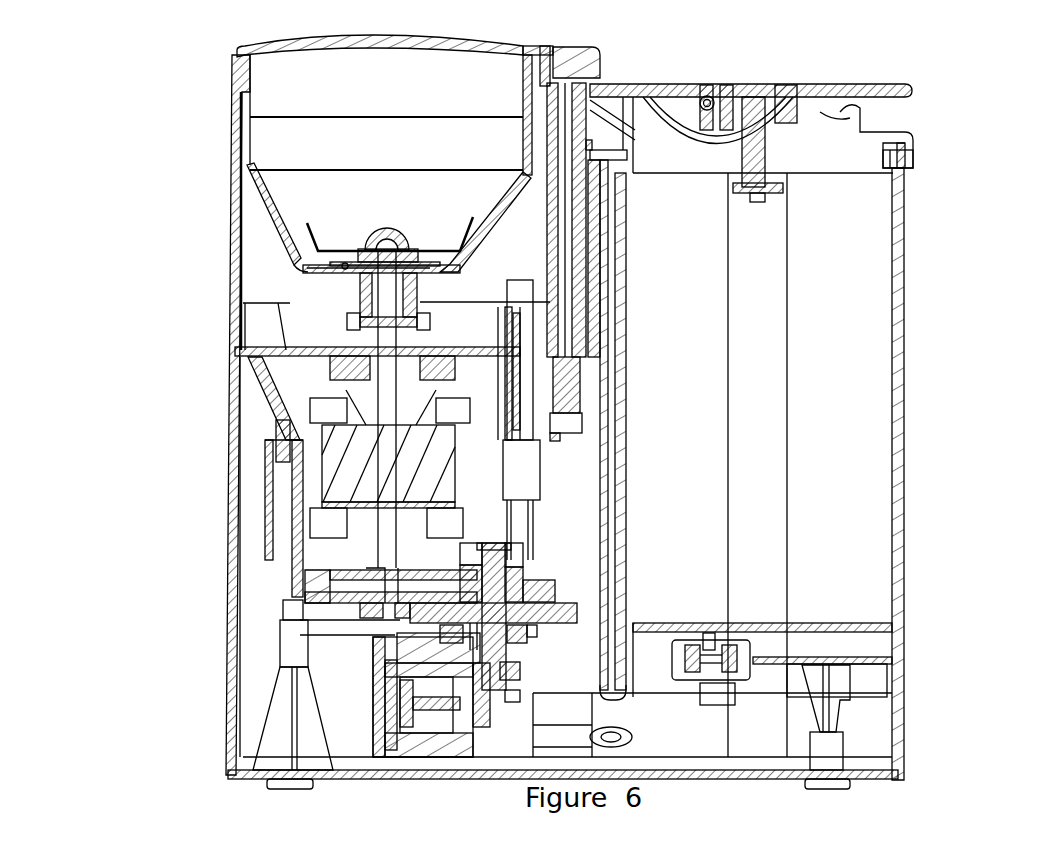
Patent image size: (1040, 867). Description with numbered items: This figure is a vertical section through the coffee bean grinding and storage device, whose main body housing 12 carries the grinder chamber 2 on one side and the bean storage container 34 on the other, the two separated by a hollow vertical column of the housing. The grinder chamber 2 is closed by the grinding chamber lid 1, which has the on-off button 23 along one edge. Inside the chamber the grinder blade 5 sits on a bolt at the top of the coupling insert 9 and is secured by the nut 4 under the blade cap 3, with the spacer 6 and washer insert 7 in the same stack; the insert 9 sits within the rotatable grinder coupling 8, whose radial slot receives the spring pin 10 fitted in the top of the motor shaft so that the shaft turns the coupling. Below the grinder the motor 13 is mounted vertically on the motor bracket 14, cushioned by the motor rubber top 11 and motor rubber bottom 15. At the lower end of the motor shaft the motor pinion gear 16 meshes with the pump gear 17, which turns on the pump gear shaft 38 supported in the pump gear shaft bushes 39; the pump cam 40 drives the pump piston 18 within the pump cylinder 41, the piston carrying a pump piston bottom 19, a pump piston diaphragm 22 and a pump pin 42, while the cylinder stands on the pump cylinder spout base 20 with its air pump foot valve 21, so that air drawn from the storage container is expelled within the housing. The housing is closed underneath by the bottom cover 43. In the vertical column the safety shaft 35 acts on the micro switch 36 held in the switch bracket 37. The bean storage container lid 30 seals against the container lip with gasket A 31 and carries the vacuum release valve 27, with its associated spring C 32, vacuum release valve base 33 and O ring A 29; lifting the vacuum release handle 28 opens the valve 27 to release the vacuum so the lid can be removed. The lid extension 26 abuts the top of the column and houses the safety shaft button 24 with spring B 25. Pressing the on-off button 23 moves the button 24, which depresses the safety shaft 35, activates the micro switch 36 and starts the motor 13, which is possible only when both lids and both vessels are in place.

The grinding chamber lid 1 is at (227, 57).
The grinder chamber 2 is at (227, 117).
The blade cap 3 is at (375, 223).
The nut 4 is at (302, 227).
The grinder blade 5 is at (366, 248).
The spacer 6 is at (350, 262).
The washer insert 7 is at (355, 288).
The grinder coupling 8 is at (363, 302).
The coupling insert 9 is at (360, 311).
The spring pin 10 is at (358, 325).
The motor rubber top 11 is at (345, 375).
The main body housing 12 is at (230, 436).
The motor 13 is at (320, 482).
The motor bracket 14 is at (265, 517).
The motor rubber bottom 15 is at (365, 590).
The motor pinion gear 16 is at (352, 603).
The pump gear 17 is at (393, 640).
The pump piston 18 is at (418, 617).
The pump piston bottom 19 is at (367, 675).
The pump cylinder spout base 20 is at (390, 690).
The air pump foot valve 21 is at (490, 712).
The pump piston diaphragm 22 is at (478, 745).
The on-off button 23 is at (594, 48).
The safety shaft button 24 is at (591, 88).
The spring B 25 is at (592, 131).
The bean storage container lid extension 26 is at (757, 92).
The vacuum release valve 27 is at (878, 94).
The vacuum release handle 28 is at (892, 98).
The O ring A 29 is at (915, 148).
The bean storage container lid 30 is at (915, 160).
The gasket A 31 is at (904, 172).
The spring C 32 is at (782, 168).
The vacuum release valve base 33 is at (787, 195).
The bean storage container 34 is at (906, 290).
The safety shaft 35 is at (590, 270).
The micro switch 36 is at (578, 392).
The switch bracket 37 is at (587, 440).
The pump gear shaft 38 is at (548, 553).
The pump gear shaft bushes 39 is at (520, 566).
The pump cam 40 is at (710, 645).
The pump cylinder 41 is at (712, 690).
The pump pin 42 is at (640, 730).
The bottom cover 43 is at (897, 773).